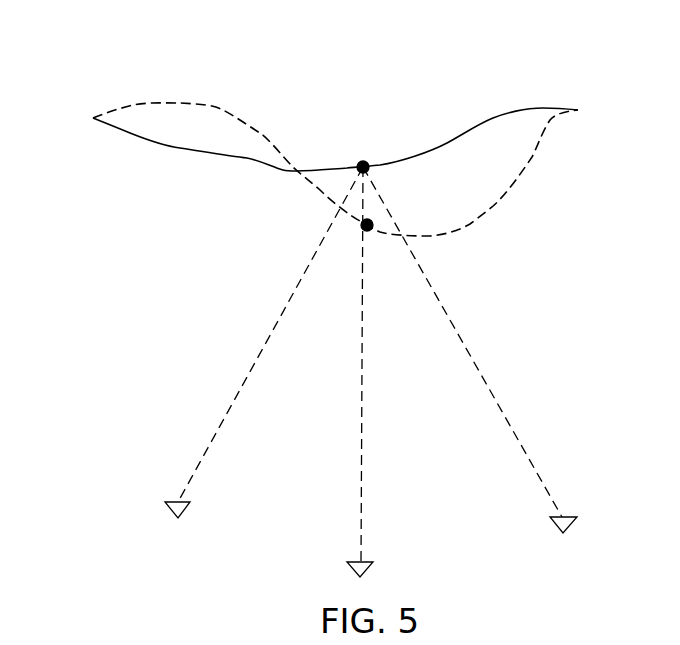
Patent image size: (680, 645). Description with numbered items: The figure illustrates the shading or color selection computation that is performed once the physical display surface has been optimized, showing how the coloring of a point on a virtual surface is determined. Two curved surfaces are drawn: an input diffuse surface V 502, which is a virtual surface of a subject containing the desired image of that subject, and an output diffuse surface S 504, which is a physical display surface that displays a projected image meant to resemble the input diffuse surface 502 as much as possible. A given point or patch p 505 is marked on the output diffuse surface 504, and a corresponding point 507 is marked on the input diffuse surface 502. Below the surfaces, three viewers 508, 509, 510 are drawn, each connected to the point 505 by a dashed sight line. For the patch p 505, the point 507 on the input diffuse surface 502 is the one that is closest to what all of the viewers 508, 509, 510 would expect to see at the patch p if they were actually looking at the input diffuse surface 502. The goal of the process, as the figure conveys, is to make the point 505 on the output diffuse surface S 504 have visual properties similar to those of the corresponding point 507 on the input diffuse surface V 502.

The input diffuse surface 502 is at (483, 213).
The output diffuse surface 504 is at (152, 142).
The point 505 is at (362, 165).
The point 507 is at (367, 228).
The viewer 508 is at (172, 501).
The viewer 509 is at (352, 563).
The viewer 510 is at (573, 516).
The output diffuse surface S is at (510, 112).
The input diffuse surface V is at (535, 145).
The point or patch p is at (363, 165).